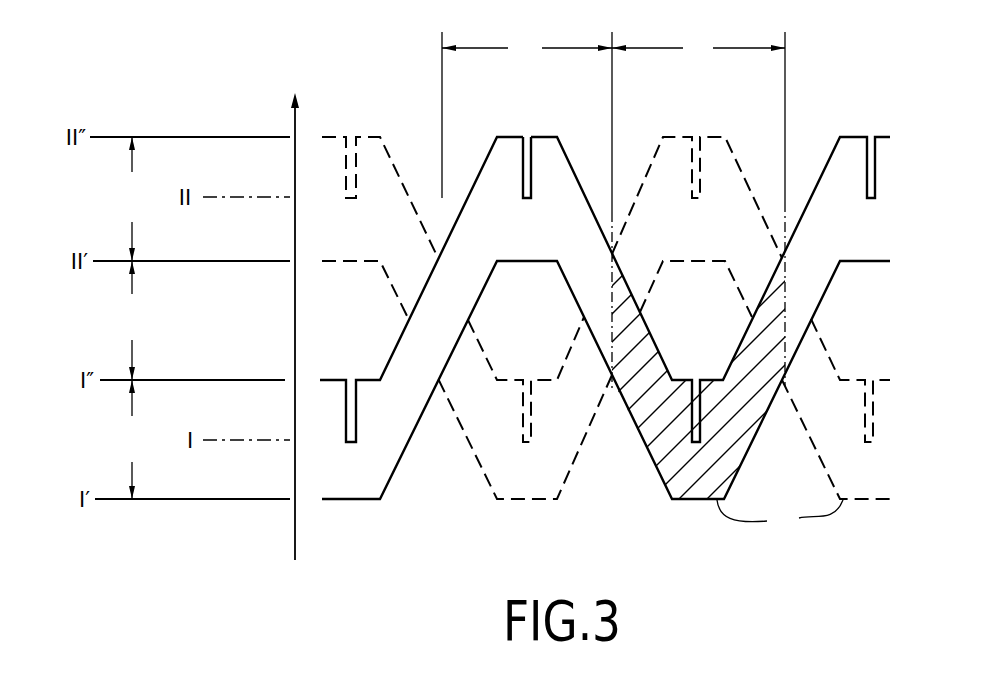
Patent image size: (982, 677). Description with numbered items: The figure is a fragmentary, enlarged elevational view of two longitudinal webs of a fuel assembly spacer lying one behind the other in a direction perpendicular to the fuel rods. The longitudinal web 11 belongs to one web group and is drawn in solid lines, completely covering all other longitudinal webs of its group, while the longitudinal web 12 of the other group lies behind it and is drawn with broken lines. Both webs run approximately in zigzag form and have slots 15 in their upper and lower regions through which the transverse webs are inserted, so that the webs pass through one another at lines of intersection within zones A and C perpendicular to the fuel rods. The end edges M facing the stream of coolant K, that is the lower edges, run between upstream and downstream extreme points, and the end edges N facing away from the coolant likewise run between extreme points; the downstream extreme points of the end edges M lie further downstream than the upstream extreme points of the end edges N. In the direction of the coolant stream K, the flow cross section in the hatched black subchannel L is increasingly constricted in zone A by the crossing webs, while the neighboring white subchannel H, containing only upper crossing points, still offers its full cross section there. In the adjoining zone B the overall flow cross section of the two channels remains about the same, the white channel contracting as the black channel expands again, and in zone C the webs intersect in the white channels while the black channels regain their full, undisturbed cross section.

The longitudinal web 11 is at (381, 499).
The longitudinal web 12 is at (388, 163).
The slots 15 is at (532, 164).
The stream of coolant K is at (304, 322).
The end edges facing away from the stream of coolant N is at (715, 137).
The end edges facing the stream of coolant M is at (780, 516).
The white flow subchannel H is at (527, 115).
The black flow subchannel L is at (698, 122).
The zone A is at (132, 439).
The zone B is at (132, 320).
The zone C is at (132, 199).